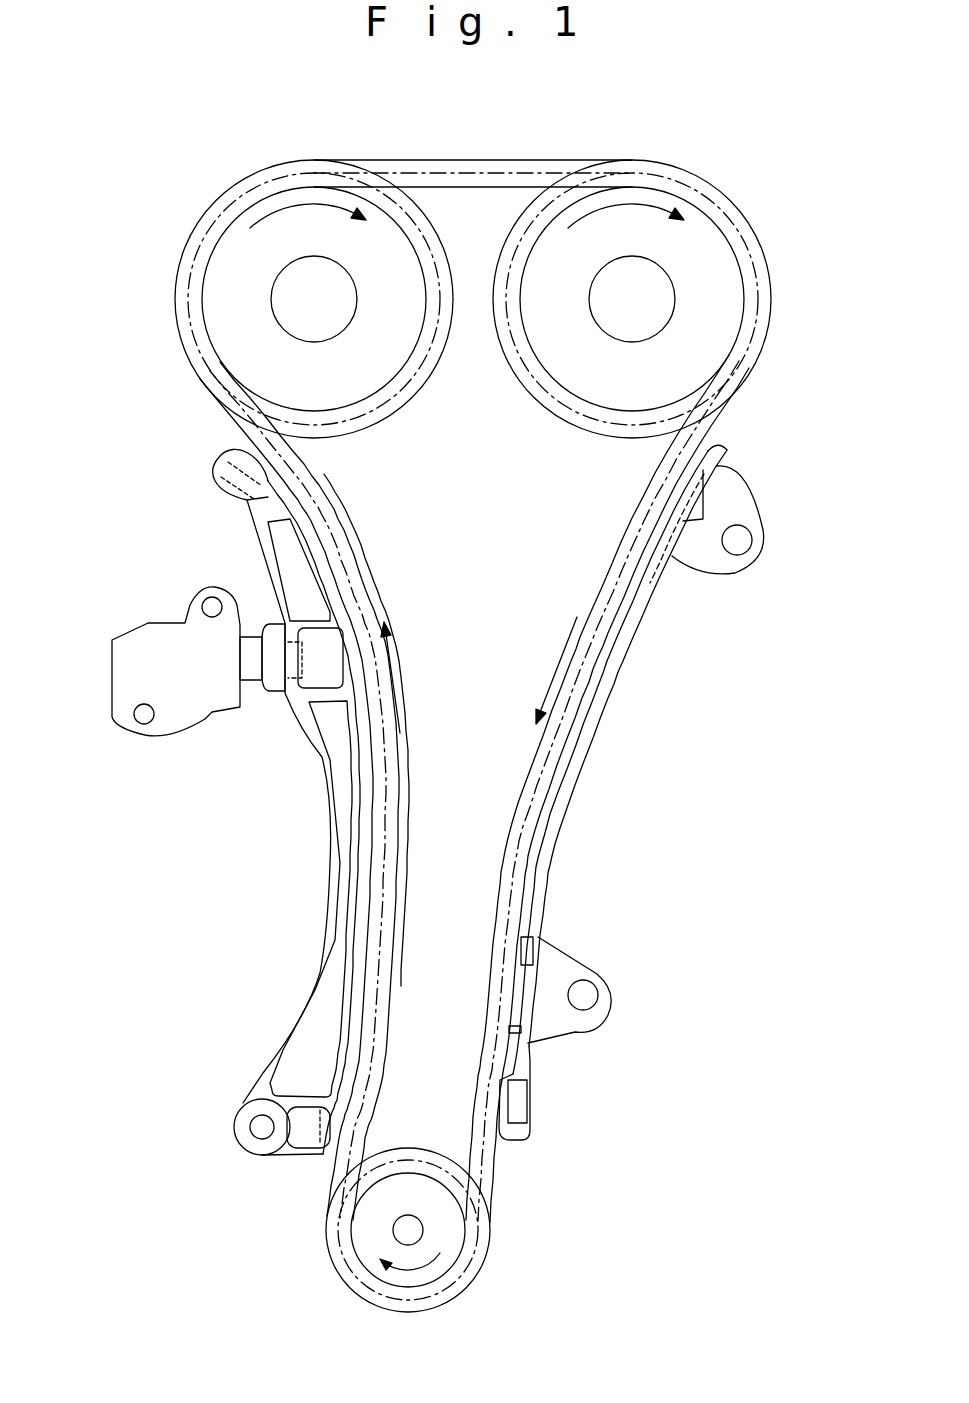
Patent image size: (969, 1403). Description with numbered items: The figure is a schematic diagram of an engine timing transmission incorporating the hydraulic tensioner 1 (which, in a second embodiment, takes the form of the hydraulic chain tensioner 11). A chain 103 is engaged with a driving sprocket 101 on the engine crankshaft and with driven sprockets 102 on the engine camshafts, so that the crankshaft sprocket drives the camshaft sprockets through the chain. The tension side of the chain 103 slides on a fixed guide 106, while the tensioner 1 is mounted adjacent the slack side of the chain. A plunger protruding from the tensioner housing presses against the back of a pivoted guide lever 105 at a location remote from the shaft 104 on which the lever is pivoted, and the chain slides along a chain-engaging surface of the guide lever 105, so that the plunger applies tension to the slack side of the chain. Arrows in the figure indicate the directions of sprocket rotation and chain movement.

The hydraulic tensioner 1 is at (166, 587).
The hydraulic chain tensioner 11 is at (207, 661).
The driving sprocket 101 is at (442, 1237).
The driven sprockets 102 is at (358, 365).
The chain 103 is at (493, 160).
The shaft 104 is at (258, 1130).
The pivoted guide lever 105 is at (326, 907).
The fixed guide 106 is at (562, 823).